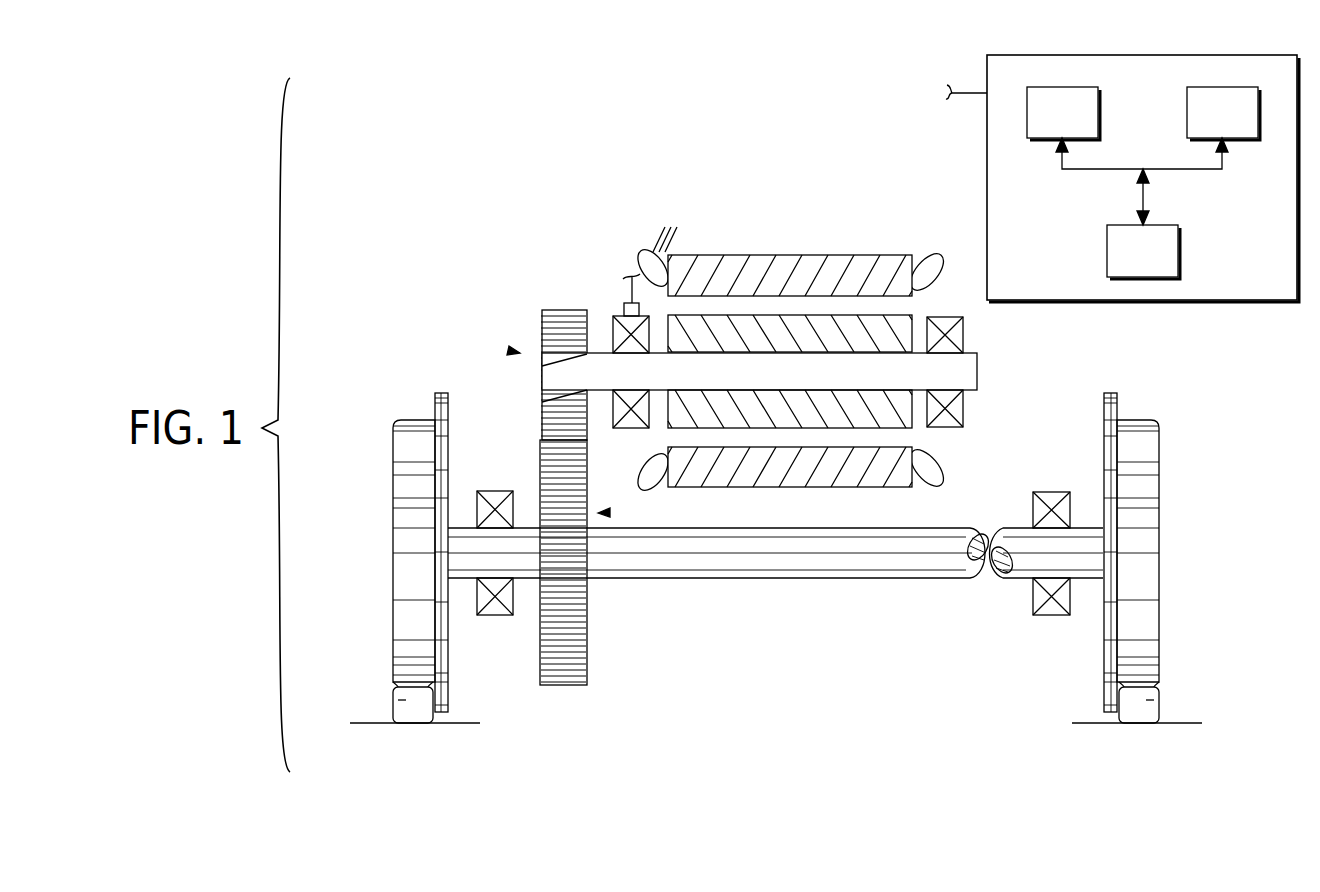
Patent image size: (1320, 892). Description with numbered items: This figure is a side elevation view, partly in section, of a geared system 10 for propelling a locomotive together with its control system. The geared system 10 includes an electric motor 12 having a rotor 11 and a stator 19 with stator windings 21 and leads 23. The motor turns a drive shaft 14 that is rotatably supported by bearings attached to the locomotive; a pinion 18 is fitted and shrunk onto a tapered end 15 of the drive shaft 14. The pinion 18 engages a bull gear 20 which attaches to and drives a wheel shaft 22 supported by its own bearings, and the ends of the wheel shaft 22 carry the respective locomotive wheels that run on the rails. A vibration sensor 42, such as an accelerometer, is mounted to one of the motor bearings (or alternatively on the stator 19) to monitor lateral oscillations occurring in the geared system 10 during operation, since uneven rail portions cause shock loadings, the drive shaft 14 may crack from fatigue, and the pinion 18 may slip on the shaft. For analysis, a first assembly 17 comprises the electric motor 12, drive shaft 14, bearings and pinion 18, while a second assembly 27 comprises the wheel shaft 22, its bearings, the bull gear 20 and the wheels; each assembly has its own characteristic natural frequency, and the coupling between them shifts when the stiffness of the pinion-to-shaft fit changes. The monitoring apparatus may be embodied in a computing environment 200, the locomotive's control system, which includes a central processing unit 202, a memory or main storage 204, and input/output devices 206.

The geared system 10 is at (392, 188).
The rotor 11 is at (912, 322).
The electric motor 12 is at (845, 188).
The drive shaft 14 is at (980, 372).
The tapered end 15 is at (566, 372).
The first assembly 17 is at (515, 352).
The pinion 18 is at (557, 335).
The stator 19 is at (777, 255).
The bull gear 20 is at (586, 642).
The stator windings 21 is at (637, 258).
The wheel shaft 22 is at (866, 578).
The leads 23 is at (690, 212).
The second assembly 27 is at (600, 513).
The vibration sensor 42 is at (622, 310).
The computing environment 200 is at (1122, 178).
The central processing unit 202 is at (1063, 113).
The memory or main storage 204 is at (1223, 113).
The input/output devices 206 is at (1143, 252).